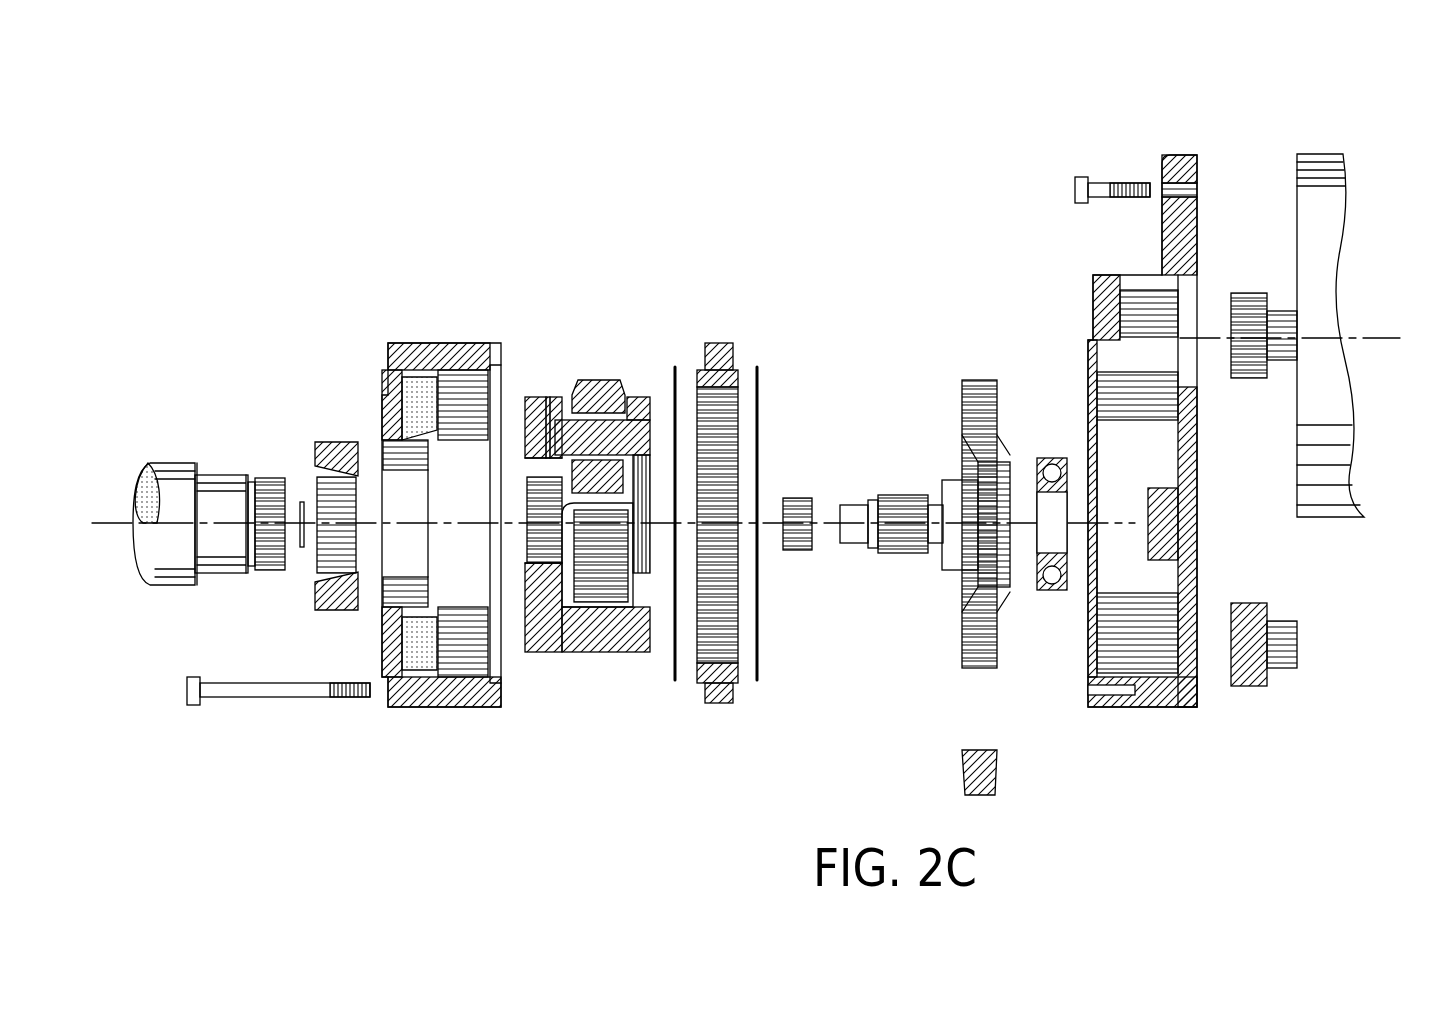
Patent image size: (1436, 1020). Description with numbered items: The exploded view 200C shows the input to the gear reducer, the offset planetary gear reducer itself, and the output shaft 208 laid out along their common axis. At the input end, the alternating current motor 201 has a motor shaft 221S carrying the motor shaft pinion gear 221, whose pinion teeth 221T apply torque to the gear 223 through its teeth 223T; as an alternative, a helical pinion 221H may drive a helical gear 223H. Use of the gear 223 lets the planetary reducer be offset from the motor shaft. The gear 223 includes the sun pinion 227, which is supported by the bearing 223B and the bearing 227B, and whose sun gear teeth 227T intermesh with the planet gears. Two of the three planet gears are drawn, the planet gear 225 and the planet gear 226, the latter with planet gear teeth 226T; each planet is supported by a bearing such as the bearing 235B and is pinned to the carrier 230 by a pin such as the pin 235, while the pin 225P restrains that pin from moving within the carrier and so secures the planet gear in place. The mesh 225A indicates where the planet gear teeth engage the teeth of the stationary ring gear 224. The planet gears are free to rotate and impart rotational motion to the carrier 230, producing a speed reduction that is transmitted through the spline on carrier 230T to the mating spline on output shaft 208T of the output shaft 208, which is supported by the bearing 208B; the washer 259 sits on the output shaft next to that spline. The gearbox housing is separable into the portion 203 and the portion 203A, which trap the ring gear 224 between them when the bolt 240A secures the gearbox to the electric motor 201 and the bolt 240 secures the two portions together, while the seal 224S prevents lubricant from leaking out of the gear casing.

The exploded view of powertrain 200C is at (455, 108).
The alternating current motor 201 is at (1323, 160).
The gearbox 203 is at (1178, 690).
The gearbox 203A is at (408, 343).
The output shaft 208 is at (148, 468).
The spline on output shaft 208T is at (270, 478).
The bearing 208B is at (330, 445).
The washer 259 is at (302, 548).
The bolt 240 is at (245, 698).
The bolt 240A is at (1080, 182).
The carrier 230 is at (571, 503).
The spline on carrier 230T is at (545, 565).
The planet gear 225 is at (592, 403).
The mesh between planet gear teeth and ring gear teeth 225A is at (573, 410).
The pin 225P is at (548, 400).
The pin 235 is at (630, 413).
The bearing 235B is at (610, 415).
The planet gear 226 is at (627, 654).
The planet gear teeth 226T is at (618, 578).
The stationary ring gear 224 is at (719, 343).
The seal 224S is at (757, 367).
The sun pinion 227 is at (889, 550).
The bearing 227B is at (805, 550).
The sun gear teeth 227T is at (905, 553).
The gear 223 is at (976, 519).
The teeth on gear 223T is at (985, 395).
The bearing 223B is at (1052, 458).
The helical gear 223H is at (1000, 770).
The motor shaft pinion gear 221 is at (1250, 380).
The pinion teeth 221T is at (1245, 293).
The motor shaft 221S is at (1283, 330).
The helical pinion 221H is at (1262, 690).